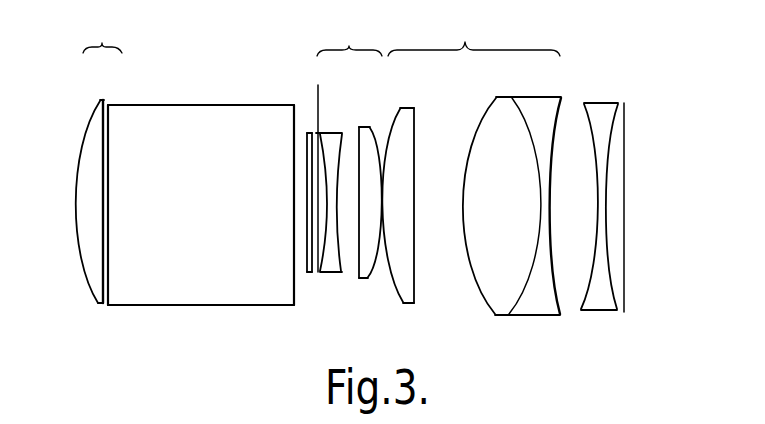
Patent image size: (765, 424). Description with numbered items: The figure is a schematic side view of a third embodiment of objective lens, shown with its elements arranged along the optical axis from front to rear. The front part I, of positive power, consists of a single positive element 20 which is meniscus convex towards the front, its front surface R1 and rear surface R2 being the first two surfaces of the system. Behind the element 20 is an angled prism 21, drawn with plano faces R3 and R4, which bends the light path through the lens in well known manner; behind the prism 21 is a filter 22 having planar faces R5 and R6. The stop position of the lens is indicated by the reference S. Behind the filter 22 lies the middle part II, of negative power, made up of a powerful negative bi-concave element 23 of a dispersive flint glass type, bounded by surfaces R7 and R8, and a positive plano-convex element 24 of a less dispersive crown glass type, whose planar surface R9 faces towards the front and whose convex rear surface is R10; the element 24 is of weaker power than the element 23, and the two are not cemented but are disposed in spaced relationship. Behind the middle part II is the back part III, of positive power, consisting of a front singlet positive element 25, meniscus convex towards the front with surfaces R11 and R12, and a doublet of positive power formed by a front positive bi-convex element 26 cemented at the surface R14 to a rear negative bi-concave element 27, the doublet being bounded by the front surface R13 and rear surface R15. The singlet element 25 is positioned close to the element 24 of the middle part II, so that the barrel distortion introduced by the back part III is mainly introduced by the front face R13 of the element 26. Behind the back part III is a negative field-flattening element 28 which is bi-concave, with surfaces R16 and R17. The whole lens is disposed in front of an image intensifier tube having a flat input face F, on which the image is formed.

The front part I is at (102, 34).
The middle part II is at (349, 35).
The back part III is at (474, 33).
The positive element 20 is at (98, 226).
The angled prism 21 is at (201, 229).
The filter 22 is at (307, 209).
The stop position S is at (318, 273).
The negative bi-concave element 23 is at (338, 243).
The positive plano-convex element 24 is at (371, 194).
The front singlet positive element 25 is at (419, 224).
The front positive bi-convex element 26 is at (483, 225).
The rear negative bi-concave element 27 is at (563, 209).
The negative field-flattening element 28 is at (615, 228).
The flat input face F is at (625, 306).
The front surface of element 20 R1 is at (84, 148).
The rear surface of element 20 R2 is at (101, 231).
The front surface of prism 21 R3 is at (104, 158).
The rear surface of prism 21 R4 is at (295, 217).
The front surface of filter 22 R5 is at (305, 133).
The rear surface of filter 22 R6 is at (322, 140).
The front surface of element 23 R7 is at (321, 216).
The rear surface of element 23 R8 is at (337, 170).
The front surface of element 24 R9 is at (358, 276).
The rear surface of element 24 R10 is at (373, 127).
The front surface of element 25 R11 is at (392, 148).
The rear surface of element 25 R12 is at (416, 128).
The front surface of element 26 R13 is at (467, 243).
The cemented surface between elements 26 and 27 R14 is at (538, 160).
The rear surface of element 27 R15 is at (562, 122).
The front surface of element 28 R16 is at (597, 172).
The rear surface of element 28 R17 is at (609, 182).